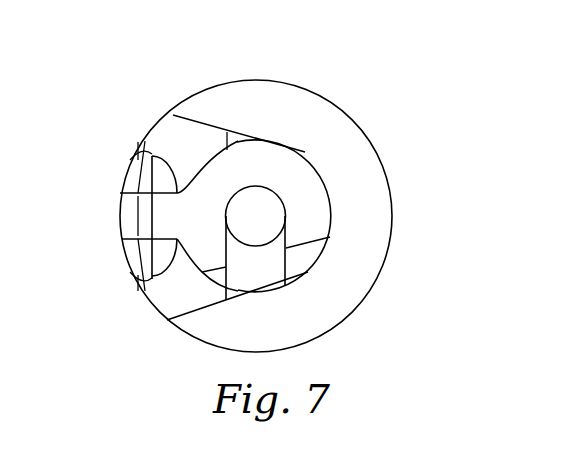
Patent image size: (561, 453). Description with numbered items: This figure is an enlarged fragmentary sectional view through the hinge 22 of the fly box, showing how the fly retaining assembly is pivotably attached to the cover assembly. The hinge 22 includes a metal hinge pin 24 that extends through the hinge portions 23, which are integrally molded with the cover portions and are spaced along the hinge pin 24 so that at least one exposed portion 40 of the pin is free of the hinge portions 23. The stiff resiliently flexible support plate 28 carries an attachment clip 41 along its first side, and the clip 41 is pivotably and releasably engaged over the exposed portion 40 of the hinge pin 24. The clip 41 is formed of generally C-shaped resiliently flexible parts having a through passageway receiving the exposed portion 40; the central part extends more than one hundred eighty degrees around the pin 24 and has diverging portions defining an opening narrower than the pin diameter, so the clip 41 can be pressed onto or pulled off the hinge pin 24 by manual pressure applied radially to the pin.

The hinge 22 is at (236, 134).
The hinge portions 23 is at (197, 135).
The hinge pin 24 is at (268, 207).
The support plate 28 is at (165, 244).
The exposed portion 40 is at (287, 222).
The attachment clip 41 is at (292, 156).